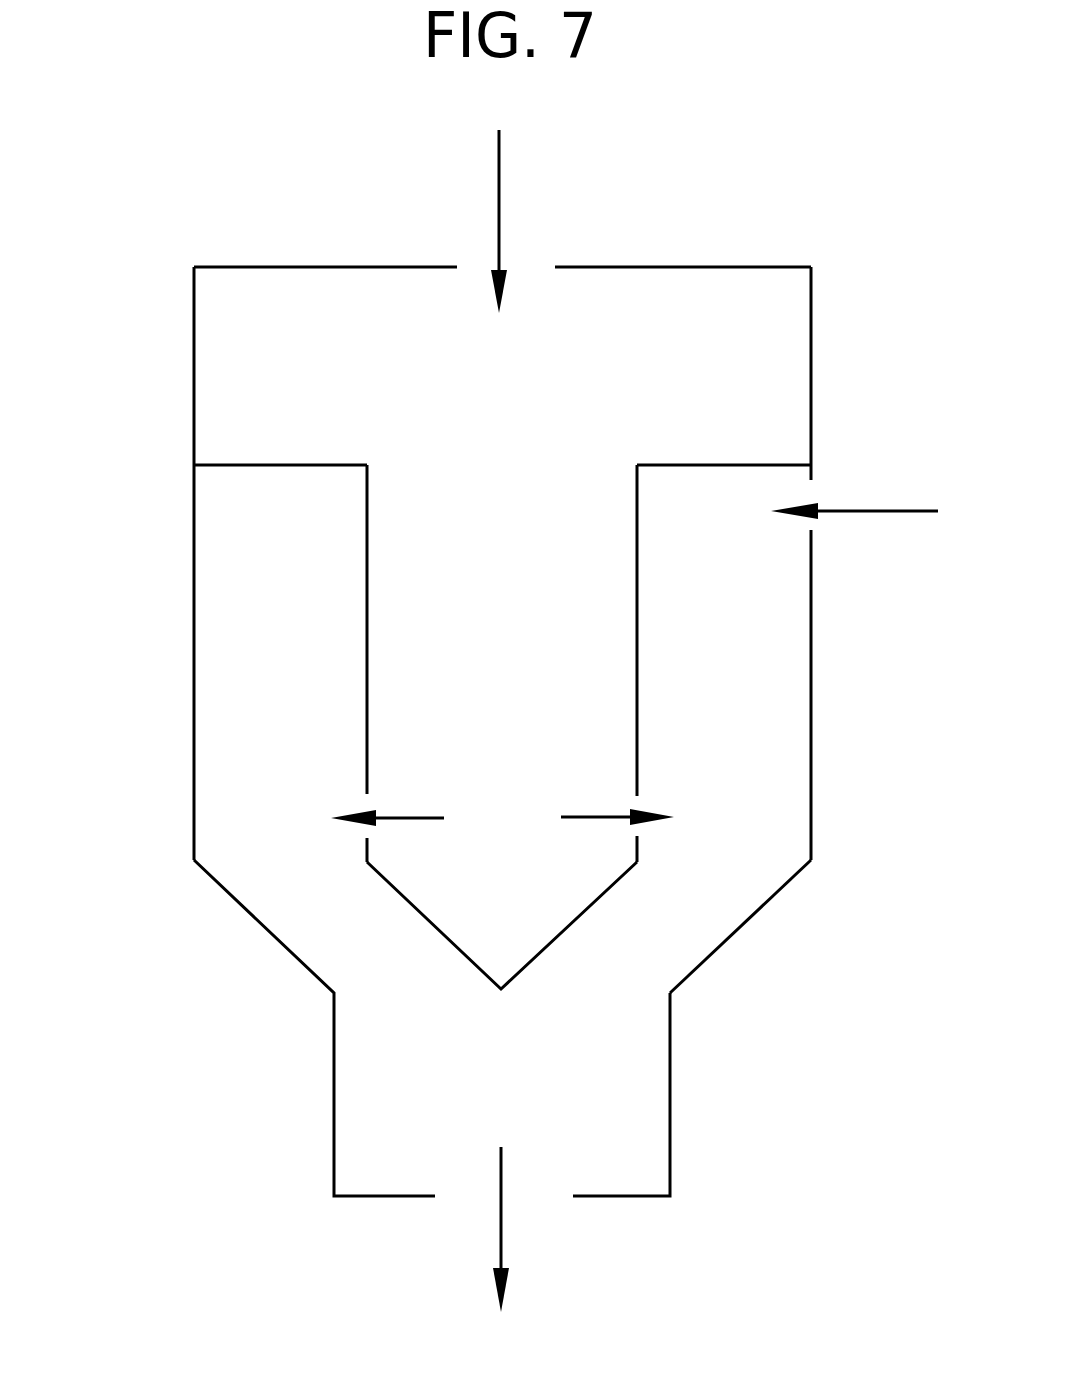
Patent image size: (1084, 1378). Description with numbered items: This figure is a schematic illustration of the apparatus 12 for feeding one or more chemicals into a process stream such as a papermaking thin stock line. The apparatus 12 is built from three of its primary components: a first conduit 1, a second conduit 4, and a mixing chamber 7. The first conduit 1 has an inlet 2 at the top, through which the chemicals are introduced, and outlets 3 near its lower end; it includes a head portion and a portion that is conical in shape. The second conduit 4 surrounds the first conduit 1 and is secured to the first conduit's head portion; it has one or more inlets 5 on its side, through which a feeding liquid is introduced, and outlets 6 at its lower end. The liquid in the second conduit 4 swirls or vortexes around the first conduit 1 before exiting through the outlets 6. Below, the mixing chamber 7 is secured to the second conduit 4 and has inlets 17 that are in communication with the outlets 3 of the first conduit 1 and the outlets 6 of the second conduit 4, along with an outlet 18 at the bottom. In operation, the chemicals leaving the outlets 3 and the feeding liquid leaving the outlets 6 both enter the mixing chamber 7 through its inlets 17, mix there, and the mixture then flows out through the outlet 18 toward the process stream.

The first conduit 1 is at (603, 346).
The inlet 2 is at (499, 200).
The outlets 3 is at (367, 791).
The second conduit 4 is at (750, 643).
The inlets 5 is at (813, 475).
The outlets 6 is at (778, 831).
The mixing chamber 7 is at (590, 1015).
The apparatus 12 is at (194, 530).
The inlets 17 is at (350, 926).
The outlet 18 is at (501, 1228).